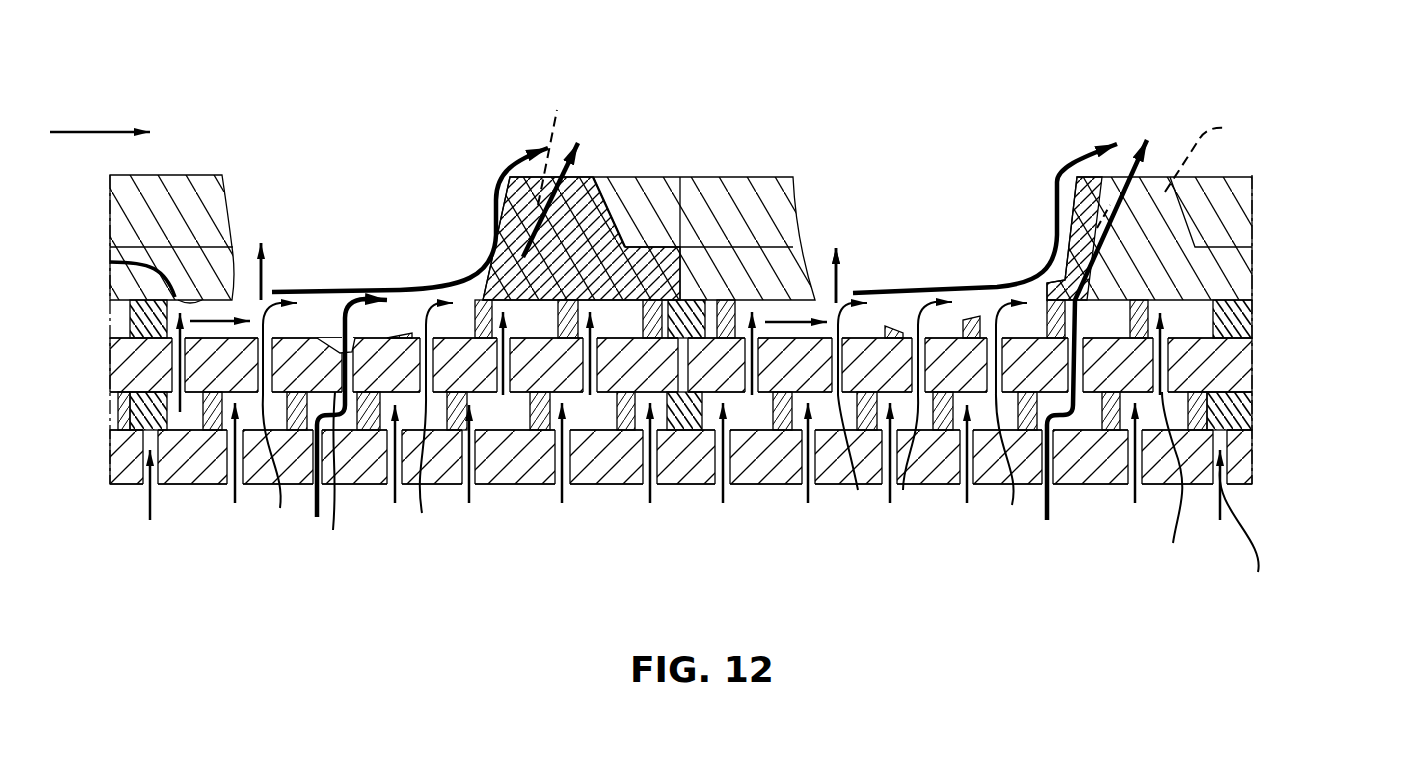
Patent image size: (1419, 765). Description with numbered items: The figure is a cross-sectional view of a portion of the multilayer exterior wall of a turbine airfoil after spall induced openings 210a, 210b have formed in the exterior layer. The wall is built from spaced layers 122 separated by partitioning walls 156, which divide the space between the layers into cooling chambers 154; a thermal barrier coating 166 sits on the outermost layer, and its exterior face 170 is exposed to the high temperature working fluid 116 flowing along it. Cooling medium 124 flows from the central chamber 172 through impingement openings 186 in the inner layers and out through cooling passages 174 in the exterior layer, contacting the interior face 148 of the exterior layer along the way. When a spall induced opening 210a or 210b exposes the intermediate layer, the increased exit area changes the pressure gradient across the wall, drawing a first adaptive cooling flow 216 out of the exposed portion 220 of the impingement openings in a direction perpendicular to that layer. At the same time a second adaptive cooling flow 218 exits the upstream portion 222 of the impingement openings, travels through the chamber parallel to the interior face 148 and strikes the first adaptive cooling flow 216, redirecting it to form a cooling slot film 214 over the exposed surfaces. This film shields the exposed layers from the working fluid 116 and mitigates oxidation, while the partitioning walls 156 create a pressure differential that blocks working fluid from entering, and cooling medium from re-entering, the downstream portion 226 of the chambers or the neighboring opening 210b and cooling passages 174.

The working fluid 116 is at (88, 130).
The spaced layers 122 is at (1240, 270).
The cooling medium 124 is at (570, 168).
The interior face 148 is at (112, 261).
The cooling chambers 154 is at (614, 305).
The partitioning wall 156 is at (142, 320).
The thermal barrier coating 166 is at (1275, 176).
The exterior face 170 is at (713, 177).
The central chamber 172 is at (680, 604).
The cooling passages 174 is at (902, 157).
The impingement openings 186 is at (1221, 485).
The spall induced opening 210a is at (373, 165).
The spall induced opening 210b is at (912, 170).
The cooling slot film 214 is at (492, 160).
The first adaptive cooling flow 216 is at (264, 273).
The second adaptive cooling flow 218 is at (216, 321).
The exposed portion 220 is at (903, 490).
The upstream portion 222 is at (177, 395).
The downstream portion 226 is at (993, 265).